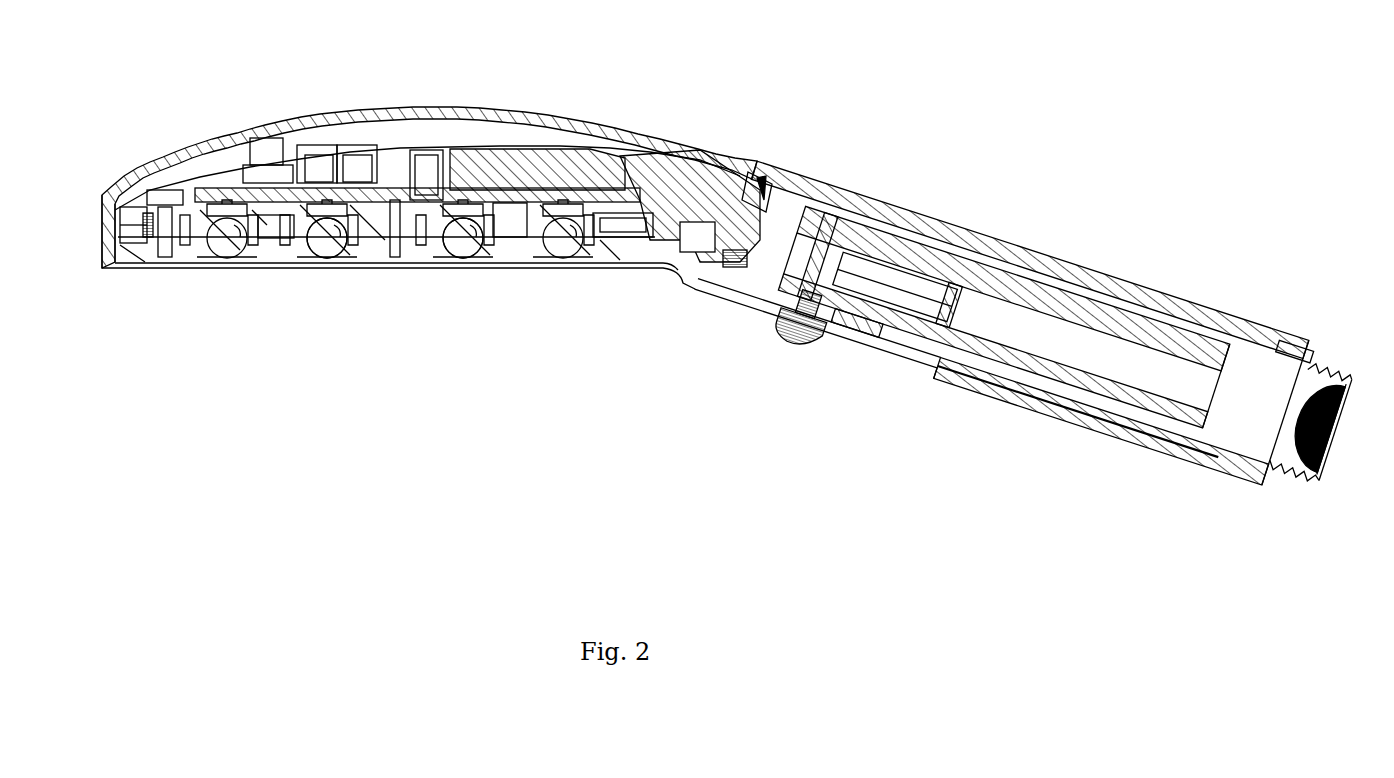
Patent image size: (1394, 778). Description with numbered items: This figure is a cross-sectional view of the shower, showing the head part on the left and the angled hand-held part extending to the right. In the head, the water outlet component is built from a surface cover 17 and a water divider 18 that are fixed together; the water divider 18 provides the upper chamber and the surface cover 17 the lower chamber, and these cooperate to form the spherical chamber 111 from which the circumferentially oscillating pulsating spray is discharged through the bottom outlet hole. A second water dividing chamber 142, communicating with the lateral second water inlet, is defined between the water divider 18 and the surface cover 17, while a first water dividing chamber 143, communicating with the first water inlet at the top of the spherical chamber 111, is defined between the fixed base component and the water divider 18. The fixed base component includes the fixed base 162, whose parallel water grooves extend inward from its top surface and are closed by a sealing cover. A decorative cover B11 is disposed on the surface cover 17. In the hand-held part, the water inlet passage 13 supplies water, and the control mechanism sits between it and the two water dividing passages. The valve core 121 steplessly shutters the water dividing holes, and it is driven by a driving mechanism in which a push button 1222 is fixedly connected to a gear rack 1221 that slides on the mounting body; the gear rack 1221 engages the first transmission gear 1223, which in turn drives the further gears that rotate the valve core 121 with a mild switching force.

The water inlet passage 13 is at (915, 285).
The surface cover 17 is at (524, 258).
The water divider 18 is at (520, 197).
The spherical chamber 111 is at (333, 248).
The decorative cover B11 is at (476, 265).
The valve core 121 is at (762, 190).
The second water dividing chamber 142 is at (285, 228).
The first water dividing chamber 143 is at (243, 197).
The fixed base 162 is at (365, 150).
The gear rack 1221 is at (700, 280).
The push button 1222 is at (803, 345).
The first transmission gear 1223 is at (862, 302).